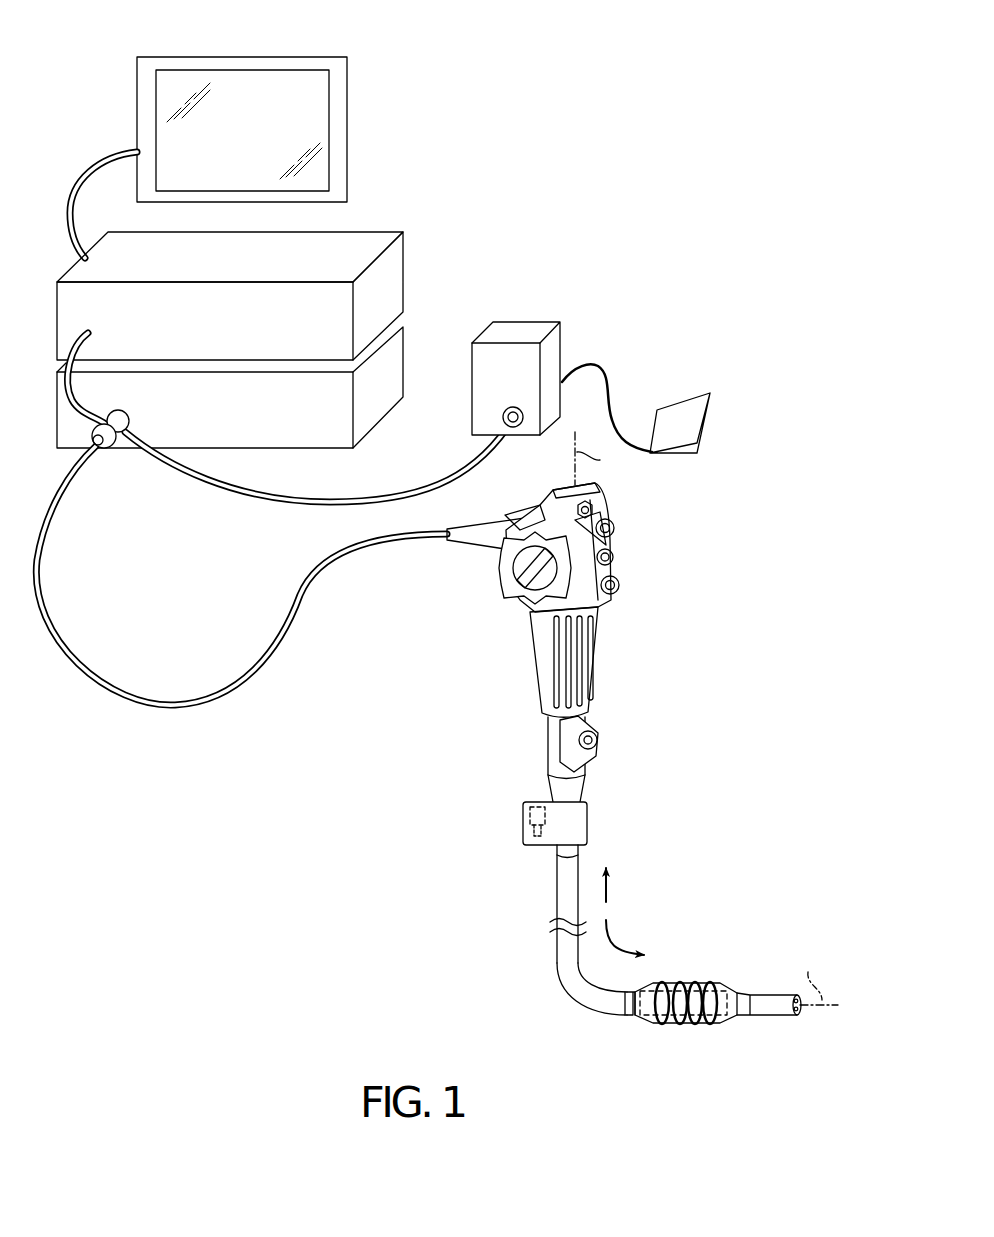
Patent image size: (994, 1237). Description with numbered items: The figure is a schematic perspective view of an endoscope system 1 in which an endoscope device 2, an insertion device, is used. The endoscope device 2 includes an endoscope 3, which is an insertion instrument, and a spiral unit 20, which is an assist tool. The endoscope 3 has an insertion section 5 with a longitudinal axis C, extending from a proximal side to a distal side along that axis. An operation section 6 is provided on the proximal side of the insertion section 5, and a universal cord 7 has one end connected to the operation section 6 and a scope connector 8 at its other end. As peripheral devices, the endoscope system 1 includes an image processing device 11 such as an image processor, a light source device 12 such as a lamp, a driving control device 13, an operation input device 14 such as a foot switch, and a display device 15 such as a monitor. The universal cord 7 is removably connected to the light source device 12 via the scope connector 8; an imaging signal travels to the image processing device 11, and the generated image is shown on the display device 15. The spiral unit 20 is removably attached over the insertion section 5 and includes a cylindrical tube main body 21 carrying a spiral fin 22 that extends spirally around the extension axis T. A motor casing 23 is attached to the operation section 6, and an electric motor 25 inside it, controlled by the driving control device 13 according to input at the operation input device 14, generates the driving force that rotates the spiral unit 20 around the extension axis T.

The endoscope system 1 is at (652, 131).
The endoscope device 2 is at (441, 717).
The endoscope 3 is at (627, 600).
The insertion section 5 is at (659, 913).
The operation section 6 is at (618, 632).
The universal cord 7 is at (402, 556).
The scope connector 8 is at (109, 452).
The image processing device 11 is at (371, 240).
The light source device 12 is at (297, 438).
The driving control device 13 is at (514, 328).
The operation input device 14 is at (700, 422).
The display device 15 is at (296, 62).
The spiral unit 20 is at (695, 940).
The tube main body 21 is at (690, 984).
The spiral fin 22 is at (664, 985).
The motor casing 23 is at (557, 823).
The electric motor 25 is at (522, 819).